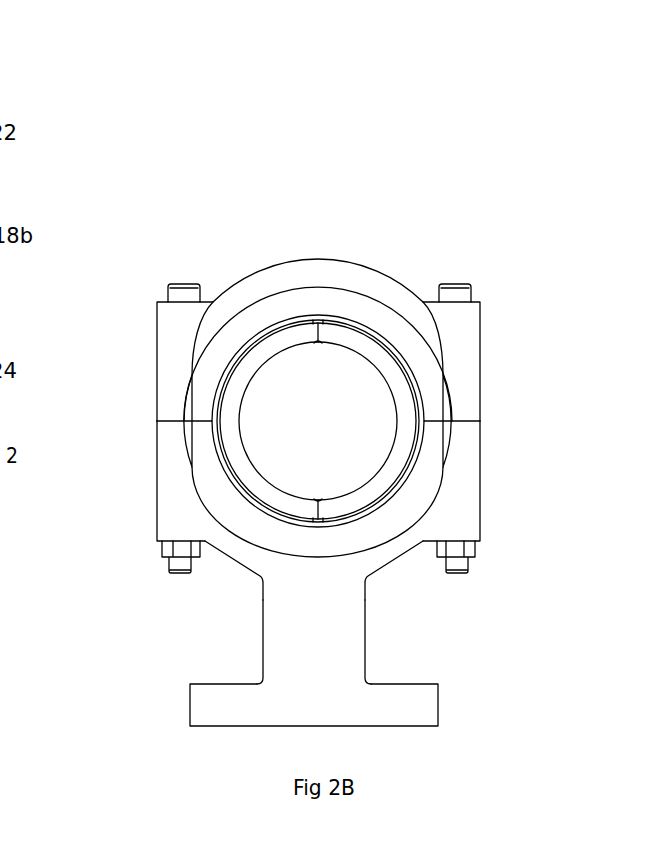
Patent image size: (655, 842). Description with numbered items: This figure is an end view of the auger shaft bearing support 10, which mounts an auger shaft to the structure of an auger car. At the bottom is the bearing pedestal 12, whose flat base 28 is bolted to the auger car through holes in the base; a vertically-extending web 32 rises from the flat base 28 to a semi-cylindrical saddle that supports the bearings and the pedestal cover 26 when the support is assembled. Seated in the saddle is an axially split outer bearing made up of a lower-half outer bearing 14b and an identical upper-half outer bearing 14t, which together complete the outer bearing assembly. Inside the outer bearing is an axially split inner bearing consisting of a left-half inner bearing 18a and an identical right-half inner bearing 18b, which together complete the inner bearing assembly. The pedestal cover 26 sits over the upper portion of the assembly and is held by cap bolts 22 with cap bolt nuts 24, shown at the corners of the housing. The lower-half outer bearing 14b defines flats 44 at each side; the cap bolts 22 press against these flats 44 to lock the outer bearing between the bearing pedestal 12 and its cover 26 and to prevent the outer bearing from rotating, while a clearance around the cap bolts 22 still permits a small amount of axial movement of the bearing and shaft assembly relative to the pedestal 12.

The auger shaft bearing support 10 is at (384, 198).
The bearing pedestal 12 is at (263, 633).
The upper-half outer bearing 14t is at (237, 335).
The lower-half outer bearing 14b is at (217, 485).
The left-half inner bearing 18a is at (231, 393).
The right-half inner bearing 18b is at (403, 397).
The cap bolts 22 is at (176, 293).
The cap bolt nuts 24 is at (166, 560).
The pedestal cover 26 is at (262, 284).
The flat base 28 is at (235, 712).
The web 32 is at (326, 652).
The flats 44 is at (187, 402).